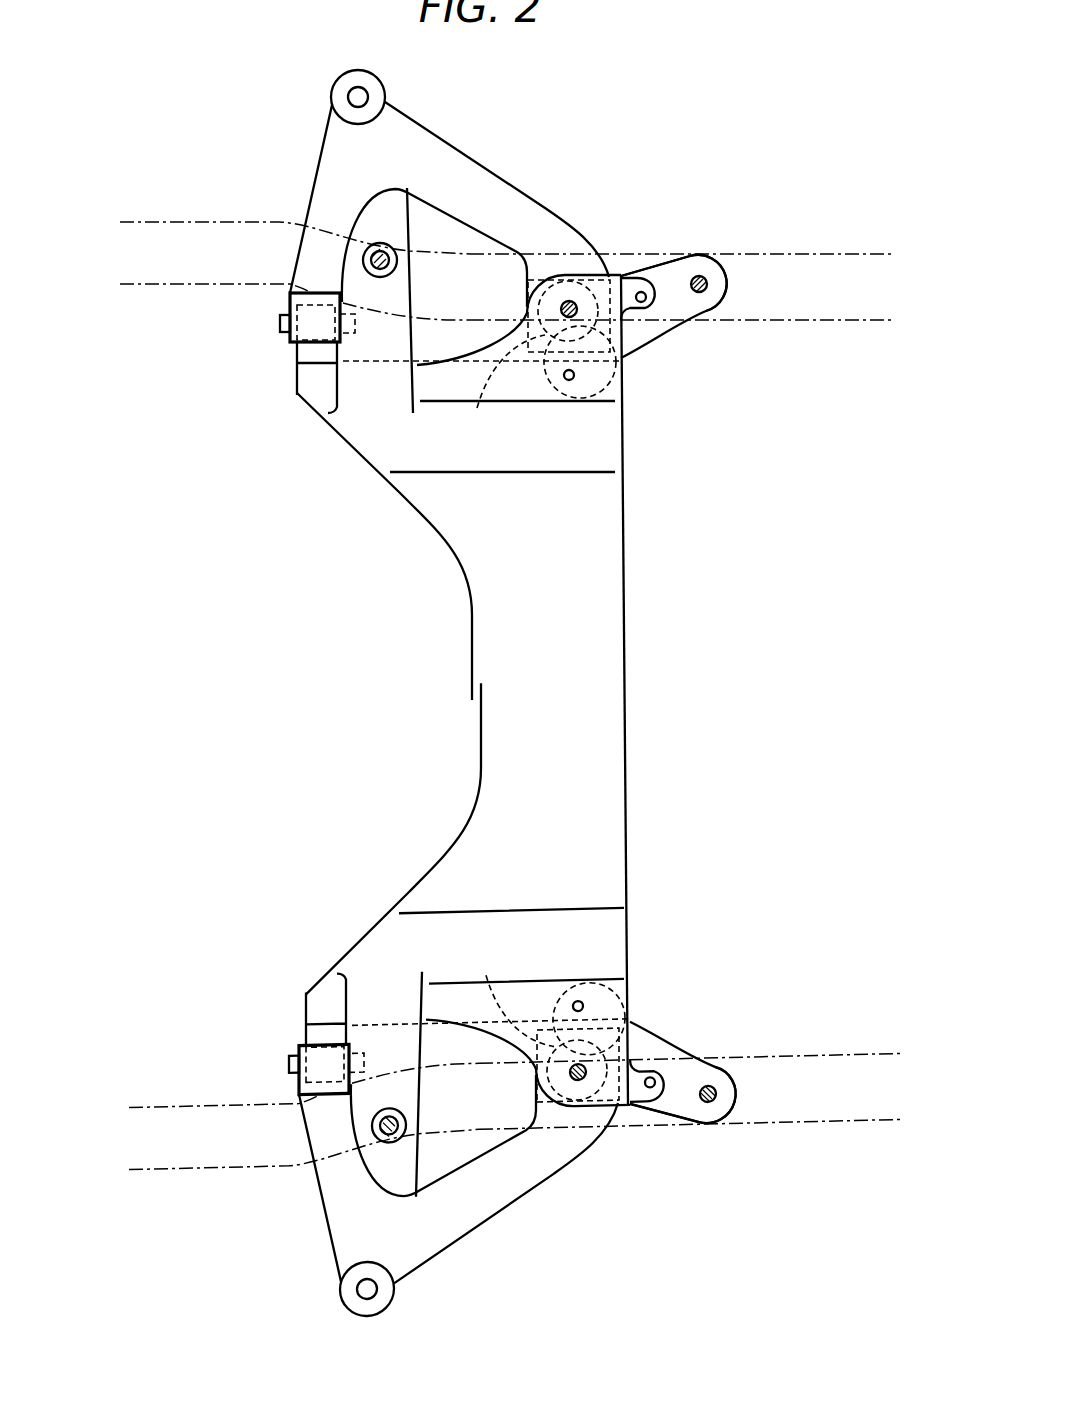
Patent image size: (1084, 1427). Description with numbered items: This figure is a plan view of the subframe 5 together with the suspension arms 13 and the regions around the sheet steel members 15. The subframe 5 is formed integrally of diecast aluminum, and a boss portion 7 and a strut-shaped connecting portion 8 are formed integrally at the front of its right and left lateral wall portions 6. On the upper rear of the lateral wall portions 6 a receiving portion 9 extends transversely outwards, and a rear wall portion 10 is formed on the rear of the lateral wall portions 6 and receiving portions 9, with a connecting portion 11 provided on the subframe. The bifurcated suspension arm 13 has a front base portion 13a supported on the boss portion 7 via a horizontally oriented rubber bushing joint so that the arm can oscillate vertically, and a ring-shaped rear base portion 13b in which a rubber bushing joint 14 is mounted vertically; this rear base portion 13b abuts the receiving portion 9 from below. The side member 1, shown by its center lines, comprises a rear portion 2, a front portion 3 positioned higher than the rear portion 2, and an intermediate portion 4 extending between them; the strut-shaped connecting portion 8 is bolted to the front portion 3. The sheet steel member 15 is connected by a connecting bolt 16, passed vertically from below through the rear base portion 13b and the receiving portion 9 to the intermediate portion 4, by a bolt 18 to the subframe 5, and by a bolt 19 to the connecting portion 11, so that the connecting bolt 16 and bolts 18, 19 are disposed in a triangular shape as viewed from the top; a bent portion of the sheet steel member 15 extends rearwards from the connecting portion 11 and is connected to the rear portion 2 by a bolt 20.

The side member 1 is at (185, 218).
The rear portion 2 is at (823, 253).
The front portion 3 is at (327, 227).
The intermediate portion 4 is at (710, 320).
The subframe 5 is at (628, 728).
The lateral wall portion 6 is at (468, 335).
The boss portion 7 is at (315, 323).
The strut-shaped connecting portion 8 is at (389, 250).
The receiving portion 9 is at (556, 292).
The rear wall portion 10 is at (624, 527).
The connecting portion 11 is at (645, 280).
The suspension arm 13 is at (310, 182).
The front base portion 13a is at (288, 302).
The rear base portion 13b is at (477, 408).
The rubber bushing joint 14 is at (623, 383).
The sheet steel member 15 is at (723, 287).
The connecting bolt 16 is at (571, 302).
The bolt 18 is at (566, 380).
The bolt 19 is at (646, 303).
The bolt 20 is at (702, 276).